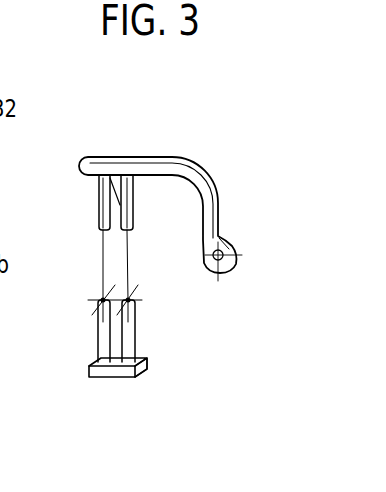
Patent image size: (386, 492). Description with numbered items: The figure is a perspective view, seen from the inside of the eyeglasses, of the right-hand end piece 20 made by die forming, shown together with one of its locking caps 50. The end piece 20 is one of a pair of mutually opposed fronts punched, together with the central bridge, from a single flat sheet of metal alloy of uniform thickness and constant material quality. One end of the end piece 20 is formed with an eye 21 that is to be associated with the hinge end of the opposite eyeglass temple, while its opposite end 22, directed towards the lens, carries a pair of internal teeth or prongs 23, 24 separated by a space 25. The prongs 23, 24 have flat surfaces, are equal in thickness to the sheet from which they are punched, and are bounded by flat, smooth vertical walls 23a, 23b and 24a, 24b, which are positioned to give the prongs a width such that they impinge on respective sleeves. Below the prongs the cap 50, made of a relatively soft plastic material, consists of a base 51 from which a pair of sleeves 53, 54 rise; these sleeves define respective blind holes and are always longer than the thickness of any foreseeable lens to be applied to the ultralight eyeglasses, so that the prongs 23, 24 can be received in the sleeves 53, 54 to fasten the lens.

The end piece 20 is at (211, 174).
The eye 21 is at (225, 275).
The opposite end 22 is at (88, 170).
The prong 23 is at (97, 229).
The vertical wall 23a is at (97, 201).
The vertical wall 23b is at (112, 174).
The prong 24 is at (134, 208).
The vertical wall 24a is at (123, 173).
The vertical wall 24b is at (136, 186).
The space 25 is at (118, 232).
The cap 50 is at (118, 378).
The base 51 is at (143, 367).
The sleeve 53 is at (97, 332).
The sleeve 54 is at (136, 340).